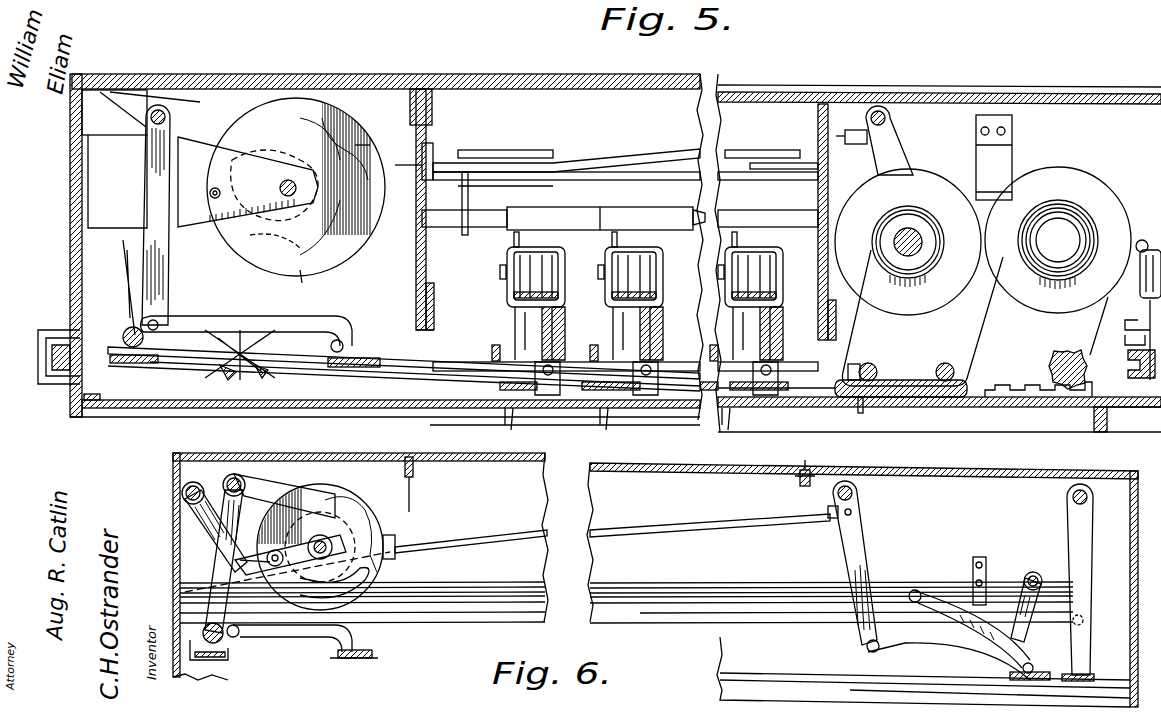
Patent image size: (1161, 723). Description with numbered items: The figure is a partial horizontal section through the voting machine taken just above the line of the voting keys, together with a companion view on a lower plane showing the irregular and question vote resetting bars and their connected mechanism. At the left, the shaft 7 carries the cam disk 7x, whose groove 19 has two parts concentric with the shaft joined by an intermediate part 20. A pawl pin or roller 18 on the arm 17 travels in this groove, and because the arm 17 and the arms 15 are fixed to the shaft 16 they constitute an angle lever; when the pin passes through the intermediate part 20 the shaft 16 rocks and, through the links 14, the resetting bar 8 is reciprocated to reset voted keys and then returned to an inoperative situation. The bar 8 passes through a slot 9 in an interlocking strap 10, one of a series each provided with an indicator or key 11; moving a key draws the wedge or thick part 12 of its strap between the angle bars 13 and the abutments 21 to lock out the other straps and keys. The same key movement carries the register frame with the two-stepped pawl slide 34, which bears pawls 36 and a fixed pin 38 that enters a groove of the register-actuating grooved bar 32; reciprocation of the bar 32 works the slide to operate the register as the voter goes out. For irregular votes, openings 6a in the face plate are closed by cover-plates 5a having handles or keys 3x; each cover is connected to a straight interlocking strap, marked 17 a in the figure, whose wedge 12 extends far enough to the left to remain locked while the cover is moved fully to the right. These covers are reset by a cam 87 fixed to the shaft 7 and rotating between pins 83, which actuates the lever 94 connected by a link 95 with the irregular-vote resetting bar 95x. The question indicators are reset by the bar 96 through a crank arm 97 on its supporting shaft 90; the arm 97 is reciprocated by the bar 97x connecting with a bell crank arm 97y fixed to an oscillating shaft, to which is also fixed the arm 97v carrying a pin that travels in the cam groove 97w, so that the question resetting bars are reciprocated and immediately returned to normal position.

In FIG. 5, the handles or keys 3x is at (855, 405).
In FIG. 5, the cover-plates 5a is at (975, 400).
In FIG. 5, the openings 6a is at (971, 340).
In FIG. 5, the shaft 7 is at (280, 182).
In FIG. 6, the shaft 7 is at (380, 545).
In FIG. 5, the cam disk 7x is at (355, 150).
In FIG. 5, the resetting bar 8 is at (350, 358).
In FIG. 6, the resetting bar 8 is at (354, 663).
In FIG. 5, the slot 9 is at (385, 358).
In FIG. 5, the interlocking strap 10 is at (408, 364).
In FIG. 5, the indicator or key 11 is at (510, 424).
In FIG. 5, the wedge or thick part 12 is at (200, 370).
In FIG. 6, the wedge or thick part 12 is at (185, 580).
In FIG. 5, the angle bars 13 is at (248, 340).
In FIG. 5, the links 14 is at (200, 322).
In FIG. 6, the links 14 is at (305, 637).
In FIG. 5, the arms 15 is at (165, 282).
In FIG. 6, the arms 15 is at (240, 640).
In FIG. 5, the shaft 16 is at (152, 125).
In FIG. 6, the shaft 16 is at (240, 476).
In FIG. 5, the arm 17 is at (798, 395).
In FIG. 6, the arm 17 is at (268, 487).
In FIG. 5, the pawl pin or roller 18 is at (330, 115).
In FIG. 5, the groove 19 is at (300, 276).
In FIG. 5, the intermediate part 20 is at (283, 228).
In FIG. 5, the abutments 21 is at (290, 377).
In FIG. 5, the register-actuating grooved bar 32 is at (565, 340).
In FIG. 5, the two-stepped pawl bar or slide 34 is at (508, 342).
In FIG. 5, the pawls 36 is at (532, 287).
In FIG. 5, the pin 38 is at (490, 348).
In FIG. 5, the pins 83 is at (212, 188).
In FIG. 5, the cam 87 is at (330, 125).
In FIG. 6, the supporting shaft 90 is at (1072, 500).
In FIG. 5, the lever 94 is at (892, 147).
In FIG. 6, the lever 94 is at (866, 540).
In FIG. 6, the link 95 is at (910, 642).
In FIG. 6, the resetting bar 95x is at (1010, 676).
In FIG. 6, the resetting bar 96 is at (1088, 678).
In FIG. 5, the crank arm 97 is at (1061, 157).
In FIG. 6, the crank arm 97 is at (1073, 538).
In FIG. 5, the arm 97v is at (208, 120).
In FIG. 6, the groove 97w is at (370, 568).
In FIG. 6, the bar 97x is at (1037, 613).
In FIG. 6, the bell crank arm 97y is at (233, 522).
In FIG. 5, the interlocking strap a is at (776, 366).